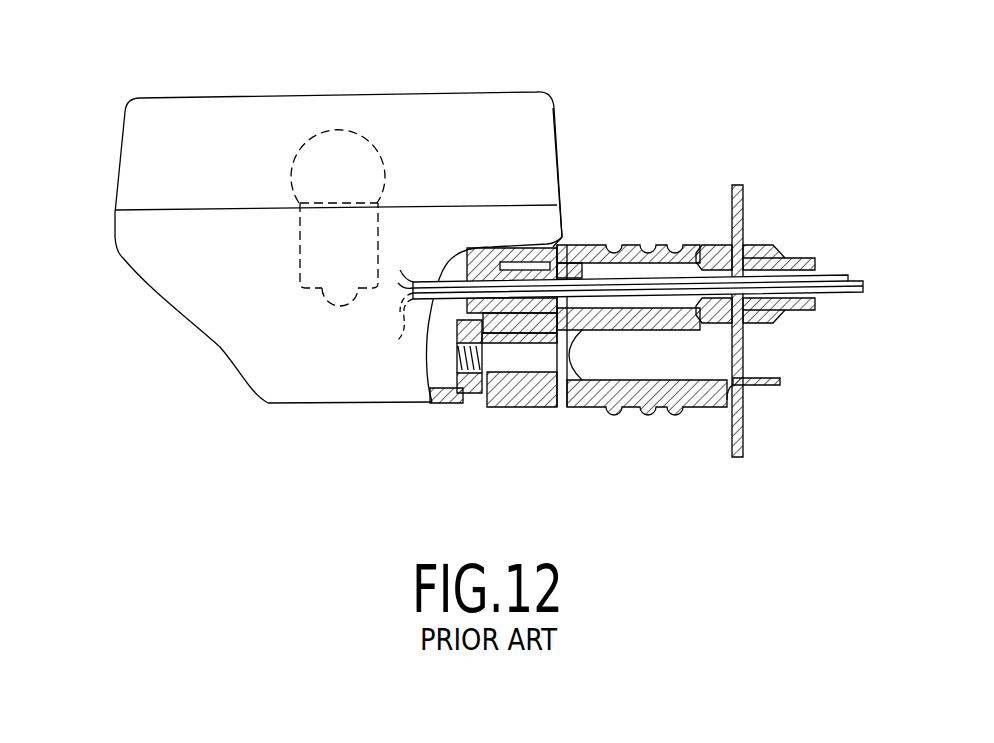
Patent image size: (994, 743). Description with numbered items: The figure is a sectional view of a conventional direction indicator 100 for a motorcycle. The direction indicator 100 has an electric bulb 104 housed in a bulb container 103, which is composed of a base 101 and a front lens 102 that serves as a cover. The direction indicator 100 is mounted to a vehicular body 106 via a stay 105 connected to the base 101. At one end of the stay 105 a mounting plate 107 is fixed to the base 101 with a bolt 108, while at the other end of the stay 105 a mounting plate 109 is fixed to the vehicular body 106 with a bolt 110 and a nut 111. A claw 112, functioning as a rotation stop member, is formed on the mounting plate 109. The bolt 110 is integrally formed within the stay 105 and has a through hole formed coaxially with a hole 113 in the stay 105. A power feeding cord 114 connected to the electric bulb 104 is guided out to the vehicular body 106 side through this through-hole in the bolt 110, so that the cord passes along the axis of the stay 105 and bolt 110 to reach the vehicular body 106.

The direction indicator 100 is at (560, 82).
The base 101 is at (243, 345).
The front lens 102 is at (138, 182).
The bulb container 103 is at (565, 172).
The electric bulb 104 is at (386, 156).
The stay 105 is at (613, 410).
The vehicular body 106 is at (743, 210).
The mounting plate 107 is at (547, 407).
The bolt 108 is at (520, 358).
The mounting plate 109 is at (727, 348).
The bolt 110 is at (810, 313).
The nut 111 is at (762, 327).
The claw 112 is at (778, 390).
The hole 113 is at (602, 260).
The power feeding cord 114 is at (580, 277).